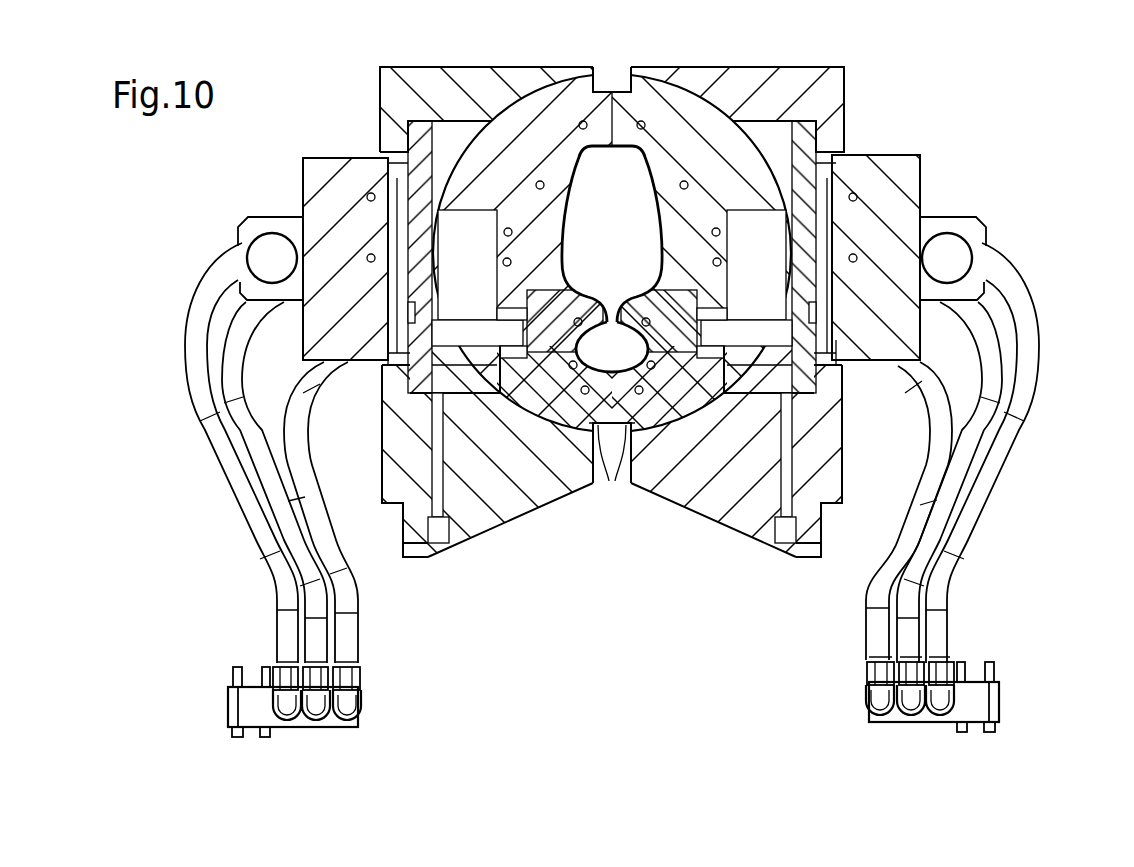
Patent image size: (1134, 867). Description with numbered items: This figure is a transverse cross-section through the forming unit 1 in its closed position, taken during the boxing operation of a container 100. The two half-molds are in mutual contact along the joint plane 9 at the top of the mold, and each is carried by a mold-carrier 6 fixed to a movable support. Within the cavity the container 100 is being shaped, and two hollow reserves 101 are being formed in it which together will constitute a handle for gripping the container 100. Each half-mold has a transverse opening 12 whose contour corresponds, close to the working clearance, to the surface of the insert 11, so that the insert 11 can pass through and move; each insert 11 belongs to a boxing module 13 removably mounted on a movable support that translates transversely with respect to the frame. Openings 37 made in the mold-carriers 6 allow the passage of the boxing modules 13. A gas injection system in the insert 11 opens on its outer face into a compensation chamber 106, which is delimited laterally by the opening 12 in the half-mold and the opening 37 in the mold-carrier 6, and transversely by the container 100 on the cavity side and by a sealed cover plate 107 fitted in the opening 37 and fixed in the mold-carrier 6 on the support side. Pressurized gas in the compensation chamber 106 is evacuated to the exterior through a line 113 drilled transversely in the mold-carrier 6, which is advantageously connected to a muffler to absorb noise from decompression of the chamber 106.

The forming unit 1 is at (945, 67).
The mold-carrier 6 is at (483, 522).
The joint plane 9 is at (615, 103).
The insert 11 is at (612, 467).
The transverse opening 12 is at (497, 293).
The boxing module 13 is at (195, 510).
The opening 37 is at (452, 130).
The container 100 is at (578, 208).
The hollow reserves 101 is at (647, 300).
The compensation chamber 106 is at (447, 257).
The sealed cover plate 107 is at (413, 178).
The line 113 is at (430, 433).